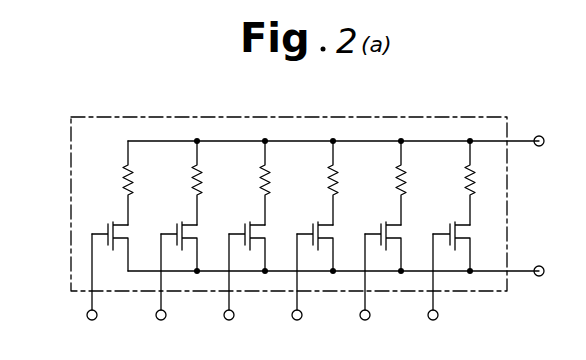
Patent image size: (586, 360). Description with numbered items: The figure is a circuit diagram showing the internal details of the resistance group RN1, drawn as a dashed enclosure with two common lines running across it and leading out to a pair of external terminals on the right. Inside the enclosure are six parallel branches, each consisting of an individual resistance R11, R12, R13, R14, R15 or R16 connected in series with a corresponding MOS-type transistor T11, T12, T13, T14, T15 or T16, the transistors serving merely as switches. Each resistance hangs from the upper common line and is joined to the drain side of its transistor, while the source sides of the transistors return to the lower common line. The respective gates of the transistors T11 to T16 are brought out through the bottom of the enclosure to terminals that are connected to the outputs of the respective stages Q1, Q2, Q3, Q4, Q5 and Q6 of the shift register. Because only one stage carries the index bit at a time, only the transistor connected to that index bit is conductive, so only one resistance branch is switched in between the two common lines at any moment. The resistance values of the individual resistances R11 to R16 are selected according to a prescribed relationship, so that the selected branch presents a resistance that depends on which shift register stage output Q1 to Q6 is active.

The resistance group RN1 is at (71, 207).
The resistance R11 is at (132, 189).
The resistance R12 is at (201, 189).
The resistance R13 is at (269, 189).
The resistance R14 is at (337, 189).
The resistance R15 is at (405, 189).
The resistance R16 is at (474, 189).
The transistor T11 is at (120, 222).
The transistor T12 is at (189, 222).
The transistor T13 is at (257, 222).
The transistor T14 is at (325, 222).
The transistor T15 is at (393, 222).
The transistor T16 is at (462, 222).
The shift register stage output Q1 is at (93, 293).
The shift register stage output Q2 is at (162, 293).
The shift register stage output Q3 is at (230, 293).
The shift register stage output Q4 is at (298, 293).
The shift register stage output Q5 is at (366, 293).
The shift register stage output Q6 is at (434, 293).